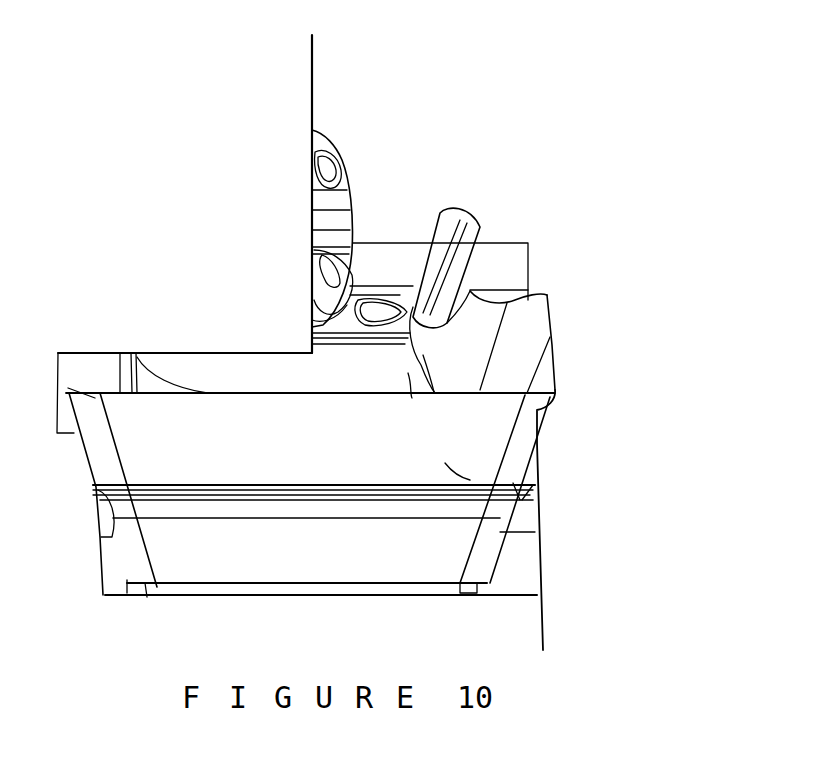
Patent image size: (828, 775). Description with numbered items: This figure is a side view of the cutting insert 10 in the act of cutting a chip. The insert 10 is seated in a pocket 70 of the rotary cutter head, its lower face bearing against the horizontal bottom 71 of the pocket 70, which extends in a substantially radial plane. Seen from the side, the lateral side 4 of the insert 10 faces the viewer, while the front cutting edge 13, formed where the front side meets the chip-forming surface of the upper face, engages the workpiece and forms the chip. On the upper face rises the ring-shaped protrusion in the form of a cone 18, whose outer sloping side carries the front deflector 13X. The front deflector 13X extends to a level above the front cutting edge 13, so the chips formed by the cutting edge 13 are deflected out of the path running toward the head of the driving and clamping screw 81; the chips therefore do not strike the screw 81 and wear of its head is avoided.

The left-hand lateral side 4 is at (315, 457).
The insert 10 is at (489, 451).
The front cutting edge 13 is at (555, 362).
The front deflector 13X is at (540, 492).
The cone 18 is at (363, 363).
The pocket 70 is at (90, 351).
The horizontal bottom 71 is at (522, 568).
The driving and clamping screw 81 is at (350, 183).